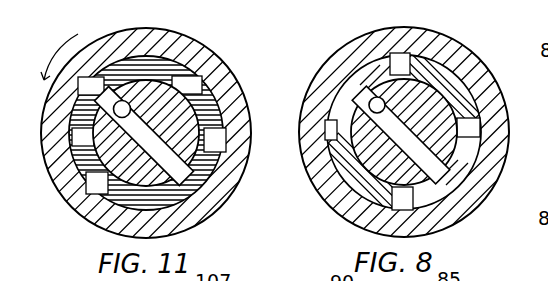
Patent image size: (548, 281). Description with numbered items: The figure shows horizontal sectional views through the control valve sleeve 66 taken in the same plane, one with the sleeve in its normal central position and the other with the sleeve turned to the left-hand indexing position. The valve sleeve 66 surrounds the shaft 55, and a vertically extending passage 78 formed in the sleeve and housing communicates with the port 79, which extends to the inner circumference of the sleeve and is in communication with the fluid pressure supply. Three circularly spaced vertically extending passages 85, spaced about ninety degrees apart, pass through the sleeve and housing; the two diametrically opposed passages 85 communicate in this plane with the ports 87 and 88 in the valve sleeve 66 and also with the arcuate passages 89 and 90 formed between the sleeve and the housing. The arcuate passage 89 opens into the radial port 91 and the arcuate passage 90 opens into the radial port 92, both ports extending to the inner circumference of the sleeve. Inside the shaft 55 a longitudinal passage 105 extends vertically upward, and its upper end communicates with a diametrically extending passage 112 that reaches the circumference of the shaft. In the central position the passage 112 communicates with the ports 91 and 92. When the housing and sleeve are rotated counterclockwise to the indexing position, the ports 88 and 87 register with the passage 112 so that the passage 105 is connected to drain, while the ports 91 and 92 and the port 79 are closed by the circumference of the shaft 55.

In FIG. 11, the shaft 55 is at (90, 172).
In FIG. 8, the shaft 55 is at (340, 170).
In FIG. 11, the valve sleeve 66 is at (92, 220).
In FIG. 8, the valve sleeve 66 is at (462, 62).
In FIG. 11, the vertically extending passage 78 is at (196, 80).
In FIG. 8, the vertically extending passage 78 is at (480, 128).
In FIG. 11, the port 79 is at (200, 44).
In FIG. 8, the port 79 is at (473, 122).
In FIG. 11, the vertically extending passages 85 is at (104, 68).
In FIG. 8, the vertically extending passages 85 is at (402, 62).
In FIG. 11, the port 87 is at (198, 186).
In FIG. 8, the port 87 is at (545, 188).
In FIG. 11, the port 88 is at (98, 94).
In FIG. 8, the port 88 is at (333, 134).
In FIG. 11, the arcuate passage 89 is at (214, 134).
In FIG. 8, the arcuate passage 89 is at (422, 200).
In FIG. 11, the arcuate passage 90 is at (78, 106).
In FIG. 8, the arcuate passage 90 is at (374, 60).
In FIG. 11, the radial port 91 is at (210, 118).
In FIG. 8, the radial port 91 is at (450, 172).
In FIG. 11, the radial port 92 is at (86, 150).
In FIG. 8, the radial port 92 is at (352, 92).
In FIG. 11, the passage 105 is at (82, 134).
In FIG. 11, the diametrically extending passage 112 is at (178, 166).
In FIG. 8, the diametrically extending passage 112 is at (468, 150).